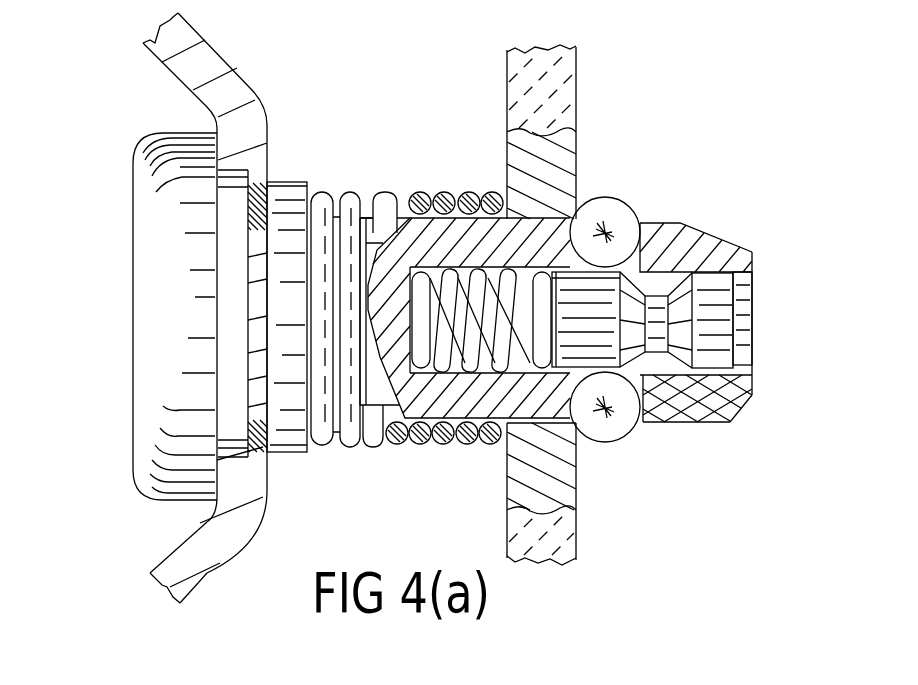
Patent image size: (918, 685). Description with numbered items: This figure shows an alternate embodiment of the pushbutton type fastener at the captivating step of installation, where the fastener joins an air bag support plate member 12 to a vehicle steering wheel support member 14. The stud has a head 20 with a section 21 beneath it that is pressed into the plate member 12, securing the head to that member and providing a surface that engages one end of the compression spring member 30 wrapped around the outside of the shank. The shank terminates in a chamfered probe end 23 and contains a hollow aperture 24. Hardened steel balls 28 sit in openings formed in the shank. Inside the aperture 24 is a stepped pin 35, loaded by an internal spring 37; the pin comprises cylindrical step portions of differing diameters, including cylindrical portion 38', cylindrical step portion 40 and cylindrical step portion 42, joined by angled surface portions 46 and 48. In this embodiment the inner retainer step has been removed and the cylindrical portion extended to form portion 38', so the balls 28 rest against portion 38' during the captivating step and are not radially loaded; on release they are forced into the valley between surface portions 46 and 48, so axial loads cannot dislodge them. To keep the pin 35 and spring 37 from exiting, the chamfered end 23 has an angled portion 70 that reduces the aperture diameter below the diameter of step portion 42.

The air bag support plate member 12 is at (265, 514).
The vehicle steering wheel support member 14 is at (568, 560).
The head 20 is at (132, 403).
The section 21 is at (268, 232).
The probe end 23 is at (702, 236).
The aperture 24 is at (722, 240).
The hardened steel balls 28 is at (619, 203).
The compression spring member 30 is at (417, 188).
The stepped pin 35 is at (652, 272).
The internal spring 37 is at (441, 447).
The cylindrical portion 38' is at (456, 171).
The cylindrical step portion 40 is at (697, 402).
The cylindrical step portion 42 is at (742, 398).
The angled surface portion 46 is at (670, 420).
The angled surface portion 48 is at (719, 410).
The angled portion 70 is at (742, 278).